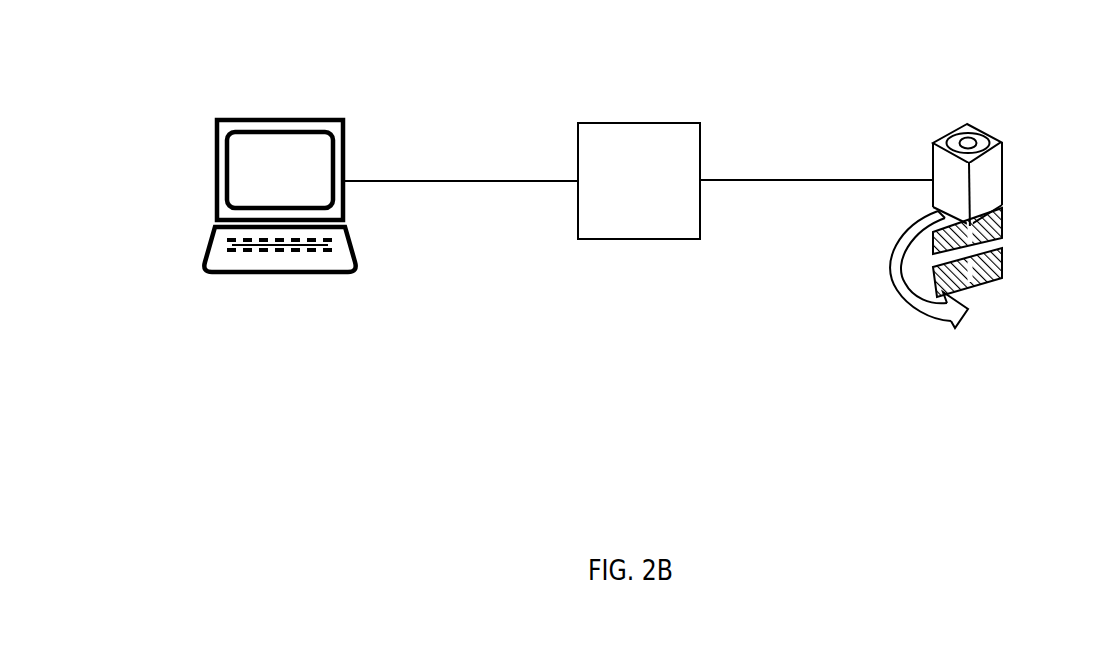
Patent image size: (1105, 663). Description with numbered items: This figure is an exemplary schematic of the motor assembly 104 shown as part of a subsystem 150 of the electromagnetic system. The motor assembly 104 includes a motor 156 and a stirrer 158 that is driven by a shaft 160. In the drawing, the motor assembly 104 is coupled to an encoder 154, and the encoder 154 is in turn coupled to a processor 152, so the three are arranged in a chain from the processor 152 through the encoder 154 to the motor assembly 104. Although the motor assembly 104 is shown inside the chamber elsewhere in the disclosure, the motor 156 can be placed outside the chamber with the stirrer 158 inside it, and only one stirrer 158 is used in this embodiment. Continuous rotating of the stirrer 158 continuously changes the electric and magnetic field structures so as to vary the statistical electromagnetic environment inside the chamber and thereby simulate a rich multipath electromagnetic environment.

The subsystem 150 is at (180, 90).
The processor 152 is at (273, 120).
The encoder 154 is at (673, 123).
The motor assembly 104 is at (947, 96).
The motor 156 is at (1003, 145).
The stirrer 158 is at (1003, 248).
The shaft 160 is at (990, 280).